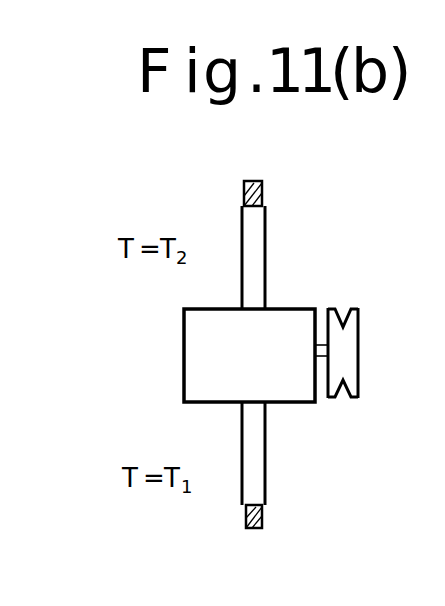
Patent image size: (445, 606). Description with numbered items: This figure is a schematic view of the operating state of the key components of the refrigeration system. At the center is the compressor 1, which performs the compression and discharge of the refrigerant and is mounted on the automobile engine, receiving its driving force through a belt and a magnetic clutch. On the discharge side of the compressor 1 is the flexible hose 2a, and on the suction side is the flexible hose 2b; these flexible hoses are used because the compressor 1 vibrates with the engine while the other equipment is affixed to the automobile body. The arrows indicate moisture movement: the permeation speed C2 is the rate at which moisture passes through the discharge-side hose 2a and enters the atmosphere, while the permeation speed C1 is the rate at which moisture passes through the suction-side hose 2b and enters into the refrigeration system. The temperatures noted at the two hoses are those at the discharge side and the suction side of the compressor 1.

The compressor 1 is at (305, 308).
The flexible hose 2a is at (253, 227).
The flexible hose 2b is at (259, 472).
The permeation speed of moisture C1 is at (260, 438).
The permeation speed of moisture C2 is at (257, 270).